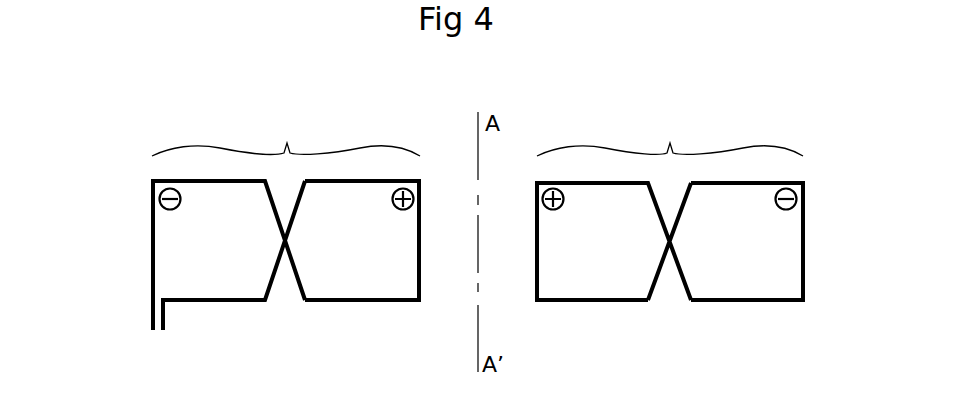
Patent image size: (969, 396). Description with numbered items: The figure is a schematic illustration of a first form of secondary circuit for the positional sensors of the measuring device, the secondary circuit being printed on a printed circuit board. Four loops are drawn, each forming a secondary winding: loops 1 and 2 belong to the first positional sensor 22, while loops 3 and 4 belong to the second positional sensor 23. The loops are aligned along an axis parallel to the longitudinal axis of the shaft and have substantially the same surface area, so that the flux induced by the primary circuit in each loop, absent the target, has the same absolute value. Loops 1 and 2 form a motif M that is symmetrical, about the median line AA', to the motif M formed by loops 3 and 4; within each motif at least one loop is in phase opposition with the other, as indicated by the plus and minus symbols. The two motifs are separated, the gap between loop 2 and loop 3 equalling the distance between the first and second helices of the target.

The first positional sensor 22 is at (171, 123).
The second positional sensor 23 is at (784, 123).
The loop 1 is at (229, 255).
The loop 2 is at (362, 240).
The loop 3 is at (614, 241).
The loop 4 is at (747, 241).